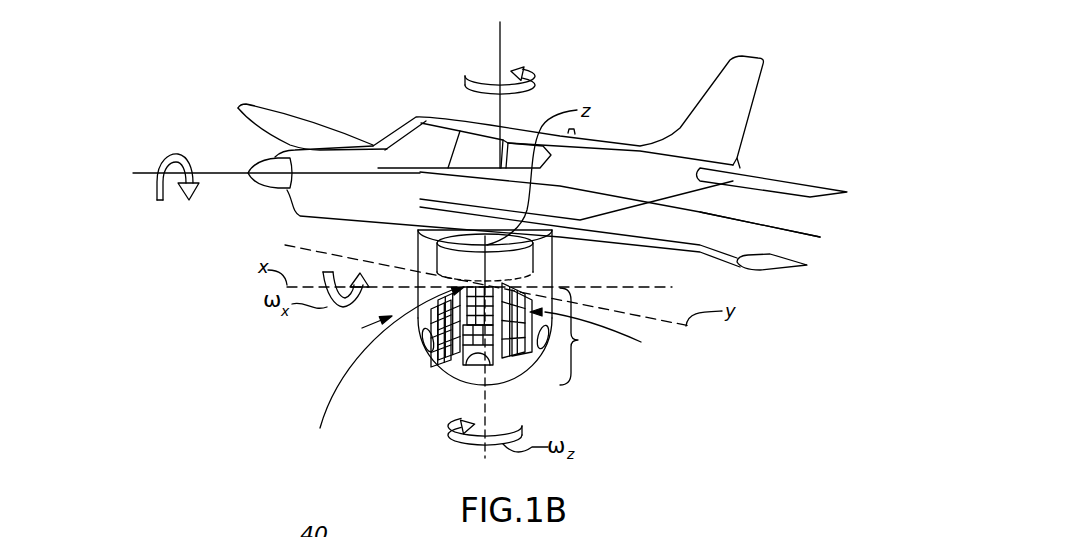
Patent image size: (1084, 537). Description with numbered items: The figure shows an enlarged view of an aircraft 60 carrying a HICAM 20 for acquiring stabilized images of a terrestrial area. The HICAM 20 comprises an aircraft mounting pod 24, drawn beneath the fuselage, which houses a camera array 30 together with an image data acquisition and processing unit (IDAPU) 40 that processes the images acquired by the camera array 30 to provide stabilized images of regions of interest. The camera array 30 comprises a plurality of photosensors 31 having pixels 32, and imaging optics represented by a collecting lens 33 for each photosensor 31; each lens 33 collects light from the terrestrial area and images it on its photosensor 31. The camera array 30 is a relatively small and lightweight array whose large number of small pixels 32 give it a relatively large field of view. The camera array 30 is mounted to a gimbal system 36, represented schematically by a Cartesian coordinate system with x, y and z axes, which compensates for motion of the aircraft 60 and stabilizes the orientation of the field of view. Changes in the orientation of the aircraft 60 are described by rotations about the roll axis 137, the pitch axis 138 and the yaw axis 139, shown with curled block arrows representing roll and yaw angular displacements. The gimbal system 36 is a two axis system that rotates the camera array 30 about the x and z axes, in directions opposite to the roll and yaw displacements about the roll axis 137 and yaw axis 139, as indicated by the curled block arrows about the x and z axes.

The HICAM 20 is at (410, 322).
The aircraft mounting pod 24 is at (417, 262).
The camera array 30 is at (595, 341).
The photosensors 31 is at (487, 368).
The pixels 32 is at (518, 353).
The collecting lens 33 is at (423, 345).
The gimbal system 36 is at (364, 321).
The image data acquisition and processing unit 40 is at (553, 258).
The aircraft 60 is at (343, 196).
The roll axis 137 is at (170, 153).
The pitch axis 138 is at (820, 237).
The yaw axis 139 is at (502, 47).